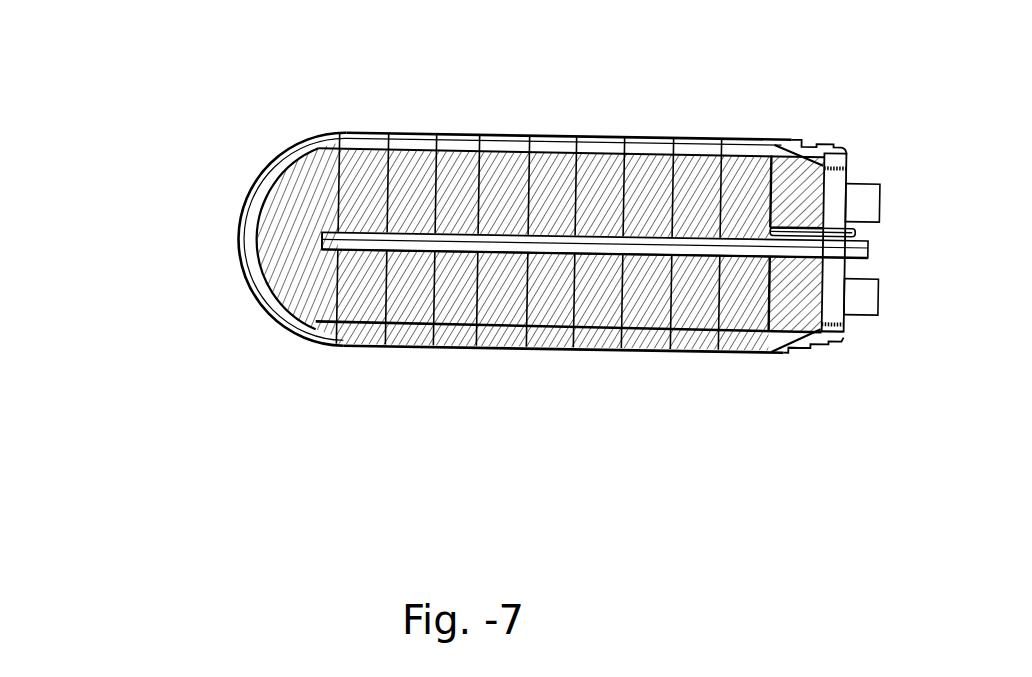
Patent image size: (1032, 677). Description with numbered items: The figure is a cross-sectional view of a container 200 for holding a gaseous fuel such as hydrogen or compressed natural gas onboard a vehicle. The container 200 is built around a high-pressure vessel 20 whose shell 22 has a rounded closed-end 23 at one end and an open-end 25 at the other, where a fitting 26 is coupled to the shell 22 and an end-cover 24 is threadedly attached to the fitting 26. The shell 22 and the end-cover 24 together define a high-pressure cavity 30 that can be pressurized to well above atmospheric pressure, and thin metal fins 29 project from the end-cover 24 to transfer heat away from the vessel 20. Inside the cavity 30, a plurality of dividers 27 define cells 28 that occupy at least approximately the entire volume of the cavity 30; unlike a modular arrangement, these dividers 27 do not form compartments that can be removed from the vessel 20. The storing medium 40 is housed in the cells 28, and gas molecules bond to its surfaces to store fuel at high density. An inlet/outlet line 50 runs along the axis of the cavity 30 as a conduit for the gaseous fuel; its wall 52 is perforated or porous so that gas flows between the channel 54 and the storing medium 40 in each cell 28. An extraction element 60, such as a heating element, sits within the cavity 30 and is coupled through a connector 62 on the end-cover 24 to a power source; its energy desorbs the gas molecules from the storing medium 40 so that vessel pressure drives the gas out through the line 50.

The high-pressure vessel 20 is at (531, 209).
The shell 22 is at (592, 352).
The closed-end 23 is at (240, 235).
The end-cover 24 is at (838, 178).
The open-end 25 is at (833, 350).
The fitting 26 is at (843, 338).
The dividers 27 is at (570, 170).
The cells 28 is at (657, 163).
The fins 29 is at (875, 200).
The cavity 30 is at (325, 332).
The storing medium 40 is at (683, 210).
The inlet/outlet line 50 is at (868, 252).
The wall 52 is at (323, 230).
The channel 54 is at (353, 240).
The extraction element 60 is at (312, 133).
The connector 62 is at (853, 232).
The container 200 is at (157, 317).